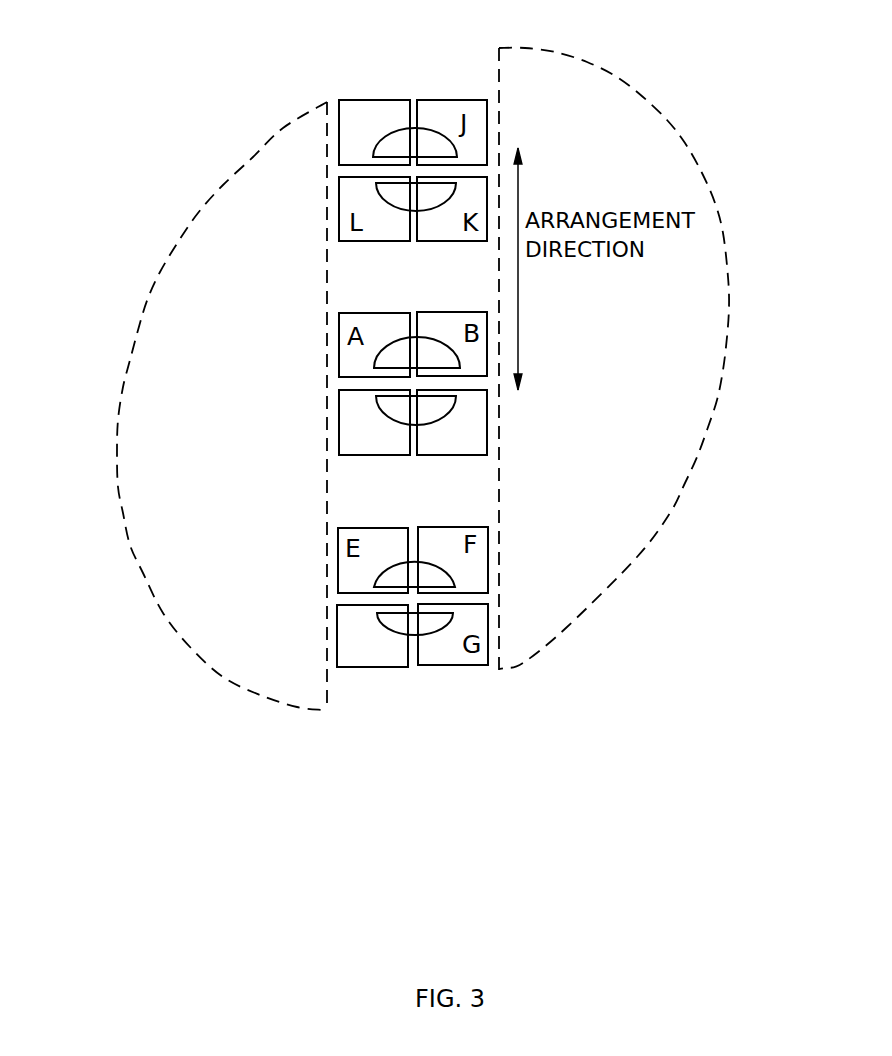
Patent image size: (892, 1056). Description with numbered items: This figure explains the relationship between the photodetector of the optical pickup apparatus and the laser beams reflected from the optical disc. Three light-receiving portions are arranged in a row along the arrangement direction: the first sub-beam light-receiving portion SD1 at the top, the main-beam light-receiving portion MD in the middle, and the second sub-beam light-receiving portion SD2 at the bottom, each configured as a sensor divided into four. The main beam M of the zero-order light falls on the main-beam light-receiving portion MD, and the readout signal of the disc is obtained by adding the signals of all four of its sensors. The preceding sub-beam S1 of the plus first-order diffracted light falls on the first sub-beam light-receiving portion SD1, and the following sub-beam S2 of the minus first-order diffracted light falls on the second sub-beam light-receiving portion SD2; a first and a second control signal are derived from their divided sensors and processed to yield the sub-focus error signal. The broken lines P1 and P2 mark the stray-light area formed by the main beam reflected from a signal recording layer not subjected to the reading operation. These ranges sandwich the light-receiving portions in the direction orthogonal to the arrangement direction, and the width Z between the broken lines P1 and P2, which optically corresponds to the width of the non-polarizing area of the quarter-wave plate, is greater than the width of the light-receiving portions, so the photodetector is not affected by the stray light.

The broken line P1 is at (137, 338).
The broken line P2 is at (722, 232).
The first sub-beam light-receiving portion SD1 is at (387, 97).
The preceding sub-beam S1 is at (433, 128).
The width Z is at (499, 252).
The main beam M is at (438, 337).
The main-beam light-receiving portion MD is at (415, 452).
The second sub-beam light-receiving portion SD2 is at (397, 678).
The following sub-beam S2 is at (435, 632).